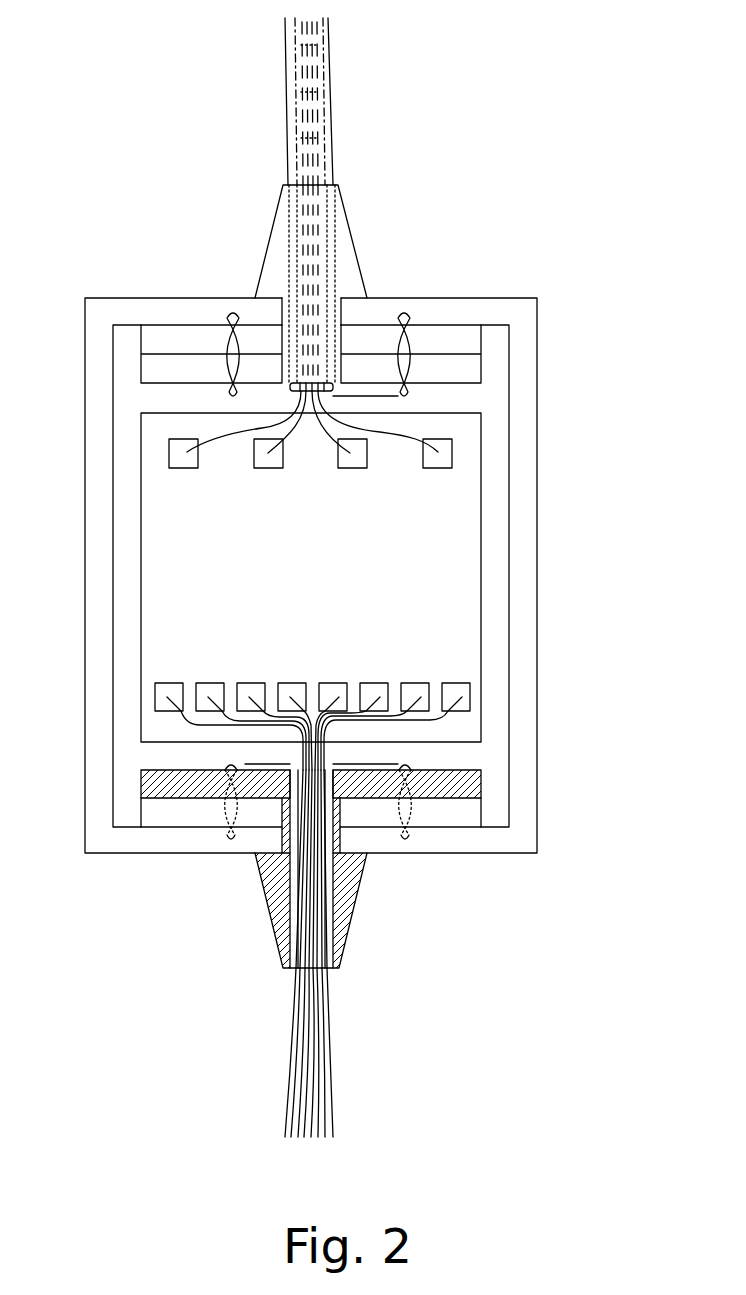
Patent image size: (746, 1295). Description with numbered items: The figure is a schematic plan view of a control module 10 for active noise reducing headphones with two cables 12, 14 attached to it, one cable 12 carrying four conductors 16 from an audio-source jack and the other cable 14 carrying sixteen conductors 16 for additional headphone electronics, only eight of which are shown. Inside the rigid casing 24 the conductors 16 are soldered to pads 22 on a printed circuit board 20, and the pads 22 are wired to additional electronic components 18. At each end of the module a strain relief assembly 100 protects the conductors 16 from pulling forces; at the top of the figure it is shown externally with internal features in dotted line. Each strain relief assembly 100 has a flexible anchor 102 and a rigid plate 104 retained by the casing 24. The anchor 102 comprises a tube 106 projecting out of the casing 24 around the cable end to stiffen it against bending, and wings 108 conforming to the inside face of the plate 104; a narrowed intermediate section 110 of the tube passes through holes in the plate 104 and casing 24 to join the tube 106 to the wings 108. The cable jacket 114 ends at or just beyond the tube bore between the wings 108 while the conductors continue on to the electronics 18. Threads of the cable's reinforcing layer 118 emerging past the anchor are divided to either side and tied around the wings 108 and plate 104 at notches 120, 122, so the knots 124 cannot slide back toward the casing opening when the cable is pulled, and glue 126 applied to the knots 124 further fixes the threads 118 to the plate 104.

The control module 10 is at (553, 258).
The cable 12 is at (350, 113).
The cable 14 is at (358, 1018).
The conductors 16 is at (228, 443).
The electronic components 18 is at (265, 618).
The printed circuit board 20 is at (395, 564).
The pads 22 is at (442, 463).
The casing 24 is at (524, 337).
The strain relief assembly 100 is at (437, 243).
The anchor 102 is at (346, 258).
The plate 104 is at (155, 340).
The tube 106 is at (267, 248).
The wings 108 is at (452, 371).
The intermediate section 110 is at (283, 833).
The jacket 114 is at (290, 990).
The reinforcing layer 118 is at (296, 97).
The notch 120 is at (414, 366).
The notch 122 is at (415, 340).
The knots 124 is at (235, 318).
The glue 126 is at (200, 540).